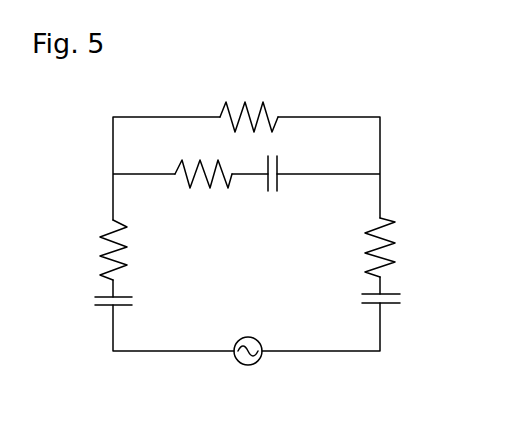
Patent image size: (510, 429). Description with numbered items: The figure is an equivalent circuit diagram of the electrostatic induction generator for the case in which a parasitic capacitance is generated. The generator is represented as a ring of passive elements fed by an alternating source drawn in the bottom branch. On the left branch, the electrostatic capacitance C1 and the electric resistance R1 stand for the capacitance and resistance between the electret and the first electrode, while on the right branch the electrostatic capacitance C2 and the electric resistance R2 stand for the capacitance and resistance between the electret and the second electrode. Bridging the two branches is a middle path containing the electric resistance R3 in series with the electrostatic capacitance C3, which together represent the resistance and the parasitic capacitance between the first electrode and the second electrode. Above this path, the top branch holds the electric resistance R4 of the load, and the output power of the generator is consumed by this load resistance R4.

The electric resistance R1 is at (100, 250).
The electric resistance R2 is at (394, 247).
The electric resistance R3 is at (203, 189).
The electric resistance of the load R4 is at (249, 105).
The electrostatic capacitance C1 is at (101, 305).
The electrostatic capacitance C2 is at (393, 302).
The electrostatic capacitance C3 is at (275, 187).